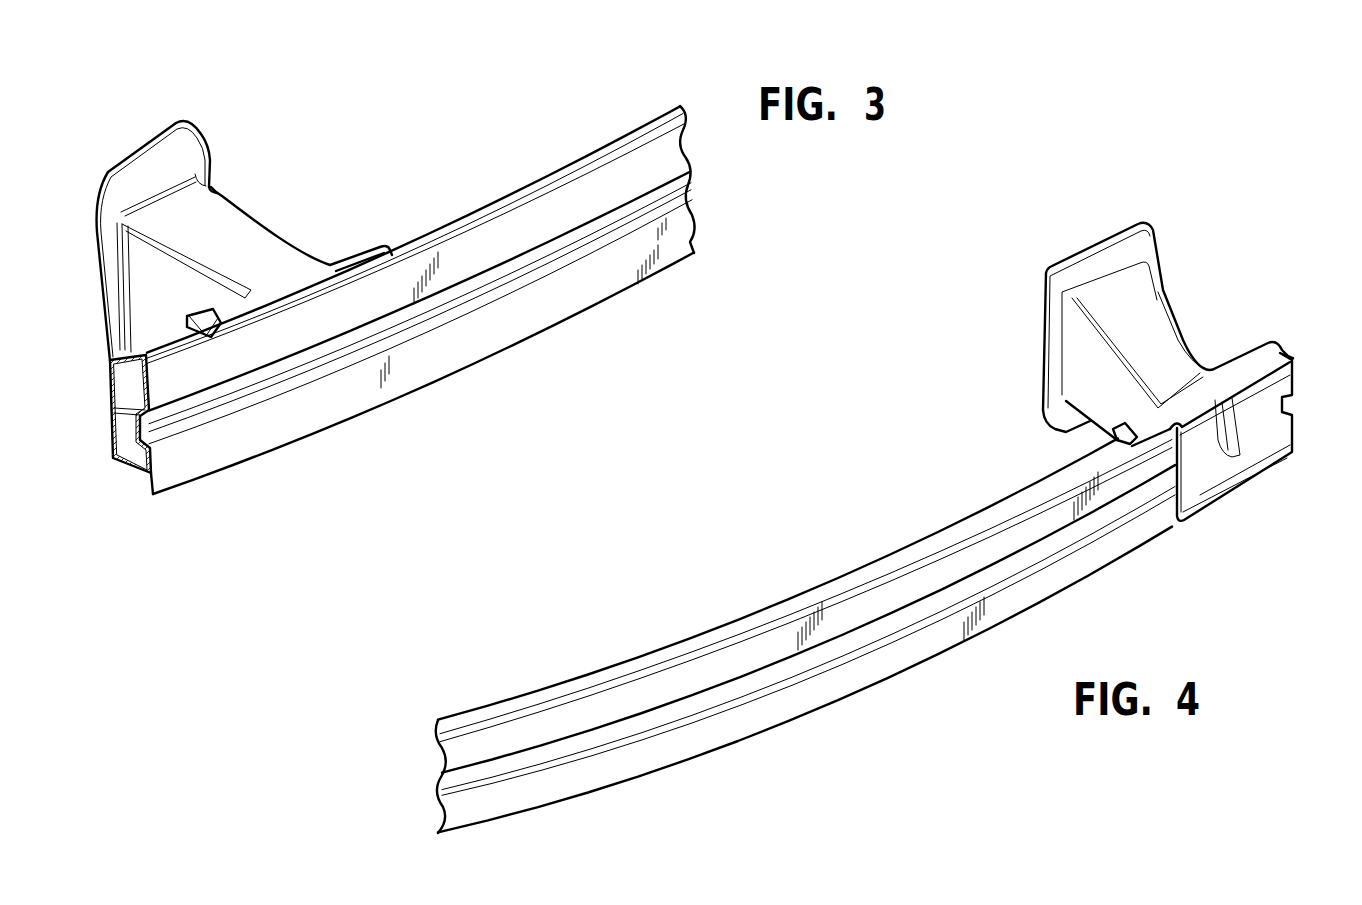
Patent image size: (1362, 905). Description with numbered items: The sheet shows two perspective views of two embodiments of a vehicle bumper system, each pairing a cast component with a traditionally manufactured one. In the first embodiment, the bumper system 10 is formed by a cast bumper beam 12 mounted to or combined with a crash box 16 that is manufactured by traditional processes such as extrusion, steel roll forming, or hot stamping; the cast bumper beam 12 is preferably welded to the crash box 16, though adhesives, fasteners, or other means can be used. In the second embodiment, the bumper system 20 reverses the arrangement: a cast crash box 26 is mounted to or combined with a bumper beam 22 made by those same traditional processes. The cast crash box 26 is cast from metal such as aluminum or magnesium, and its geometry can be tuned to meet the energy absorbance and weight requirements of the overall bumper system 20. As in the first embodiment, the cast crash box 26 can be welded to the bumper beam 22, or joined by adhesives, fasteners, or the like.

In FIG. 3, the bumper system 10 is at (649, 84).
In FIG. 3, the cast bumper beam 12 is at (509, 322).
In FIG. 3, the crash box 16 is at (237, 206).
In FIG. 4, the bumper system 20 is at (537, 604).
In FIG. 4, the bumper beam 22 is at (815, 584).
In FIG. 4, the cast crash box 26 is at (1185, 332).